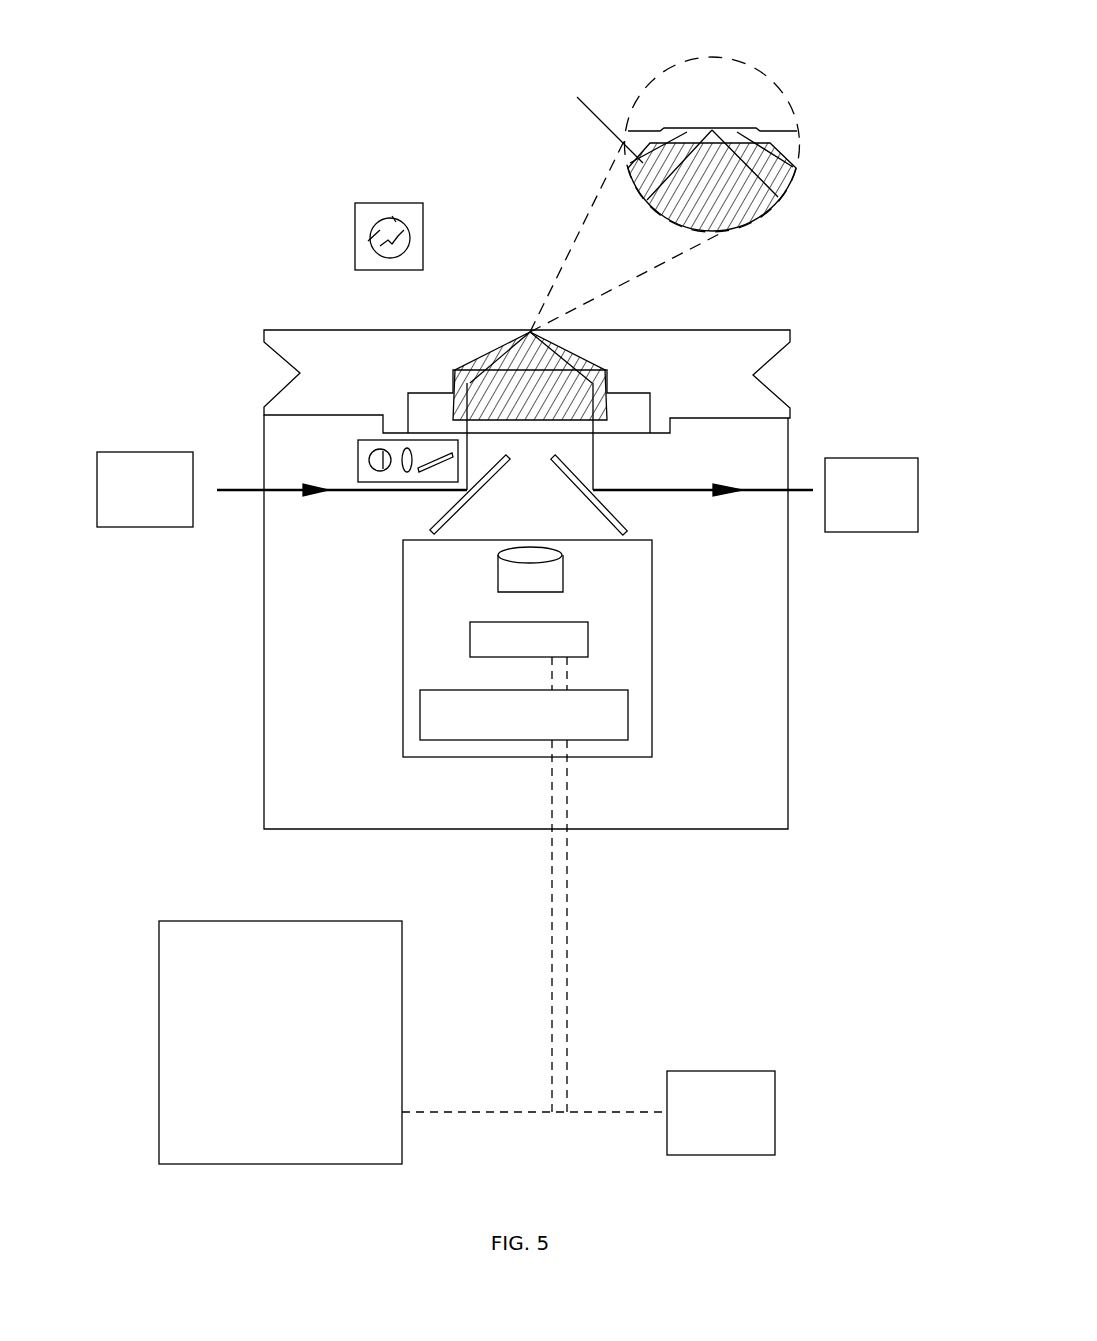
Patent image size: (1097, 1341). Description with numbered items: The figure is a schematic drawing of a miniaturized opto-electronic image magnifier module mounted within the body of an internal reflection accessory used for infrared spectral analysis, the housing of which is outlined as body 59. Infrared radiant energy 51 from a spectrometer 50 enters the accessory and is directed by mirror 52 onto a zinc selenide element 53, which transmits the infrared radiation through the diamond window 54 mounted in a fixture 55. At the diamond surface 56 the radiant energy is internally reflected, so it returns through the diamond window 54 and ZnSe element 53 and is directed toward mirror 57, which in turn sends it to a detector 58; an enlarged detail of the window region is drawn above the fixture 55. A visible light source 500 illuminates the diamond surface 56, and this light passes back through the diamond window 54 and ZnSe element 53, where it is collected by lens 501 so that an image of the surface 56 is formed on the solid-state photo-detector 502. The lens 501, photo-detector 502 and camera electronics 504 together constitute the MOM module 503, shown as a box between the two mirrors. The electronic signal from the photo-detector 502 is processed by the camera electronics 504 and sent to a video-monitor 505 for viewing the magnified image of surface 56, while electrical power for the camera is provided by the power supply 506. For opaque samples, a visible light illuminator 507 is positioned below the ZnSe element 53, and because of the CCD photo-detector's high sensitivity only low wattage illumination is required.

The spectrometer 50 is at (145, 489).
The infrared radiant energy 51 is at (246, 496).
The mirror 52 is at (453, 494).
The zinc selenide (ZnSe) element 53 is at (600, 410).
The diamond window 54 is at (740, 135).
The fixture 55 is at (317, 327).
The diamond surface 56 is at (703, 128).
The mirror 57 is at (603, 495).
The detector 58 is at (871, 495).
The housing 59 is at (795, 731).
The visible light source 500 is at (386, 203).
The lens 501 is at (530, 569).
The solid-state photo-detector 502 is at (529, 656).
The MOM module 503 is at (652, 647).
The camera electronics 504 is at (524, 901).
The video-monitor 505 is at (413, 1042).
The power supply 506 is at (721, 1113).
The visible light illuminator 507 is at (355, 460).